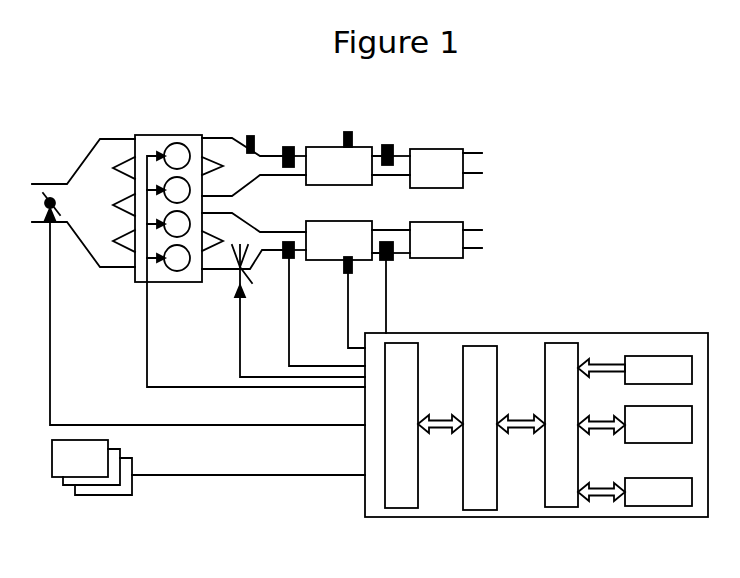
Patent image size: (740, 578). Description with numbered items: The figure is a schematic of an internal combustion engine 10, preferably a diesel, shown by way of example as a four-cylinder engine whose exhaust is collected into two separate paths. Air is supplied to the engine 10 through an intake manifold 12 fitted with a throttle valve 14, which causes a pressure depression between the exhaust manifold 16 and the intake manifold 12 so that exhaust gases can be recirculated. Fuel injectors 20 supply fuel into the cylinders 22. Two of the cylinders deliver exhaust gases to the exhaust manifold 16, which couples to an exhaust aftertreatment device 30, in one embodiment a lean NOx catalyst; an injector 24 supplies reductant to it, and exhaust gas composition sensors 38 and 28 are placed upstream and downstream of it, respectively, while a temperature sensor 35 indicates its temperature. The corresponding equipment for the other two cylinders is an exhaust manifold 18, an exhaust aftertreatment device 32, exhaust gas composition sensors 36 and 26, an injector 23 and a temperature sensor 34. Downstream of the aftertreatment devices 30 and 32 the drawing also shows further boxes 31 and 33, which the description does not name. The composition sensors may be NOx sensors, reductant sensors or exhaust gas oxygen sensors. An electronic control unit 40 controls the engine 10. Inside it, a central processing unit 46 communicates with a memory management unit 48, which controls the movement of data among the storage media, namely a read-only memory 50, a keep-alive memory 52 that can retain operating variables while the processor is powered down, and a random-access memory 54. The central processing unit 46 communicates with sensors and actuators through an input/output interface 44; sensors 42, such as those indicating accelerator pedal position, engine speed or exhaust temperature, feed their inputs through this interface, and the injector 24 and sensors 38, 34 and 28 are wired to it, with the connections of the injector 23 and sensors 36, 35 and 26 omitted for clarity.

The internal combustion engine 10 is at (168, 212).
The intake manifold 12 is at (127, 138).
The throttle valve 14 is at (45, 198).
The exhaust manifold 16 is at (232, 133).
The exhaust manifold 18 is at (230, 209).
The fuel injectors 20 is at (155, 153).
The cylinders 22 is at (178, 277).
The injector 23 is at (250, 135).
The injector 24 is at (240, 267).
The exhaust gas composition sensor 26 is at (392, 148).
The exhaust gas composition sensor 28 is at (393, 258).
The exhaust aftertreatment device 30 is at (358, 166).
The first downstream catalyst 31 is at (446, 168).
The exhaust aftertreatment device 32 is at (358, 240).
The second downstream catalyst 33 is at (446, 240).
The temperature sensor 34 is at (345, 267).
The temperature sensor 35 is at (348, 131).
The exhaust gas composition sensor 36 is at (283, 150).
The exhaust gas composition sensor 38 is at (285, 258).
The electronic control unit 40 is at (536, 390).
The sensors 42 is at (127, 497).
The input/output interface 44 is at (402, 342).
The central processing unit 46 is at (472, 345).
The memory management unit 48 is at (560, 343).
The read-only memory 50 is at (650, 356).
The keep-alive memory 52 is at (657, 444).
The random-access memory 54 is at (650, 477).